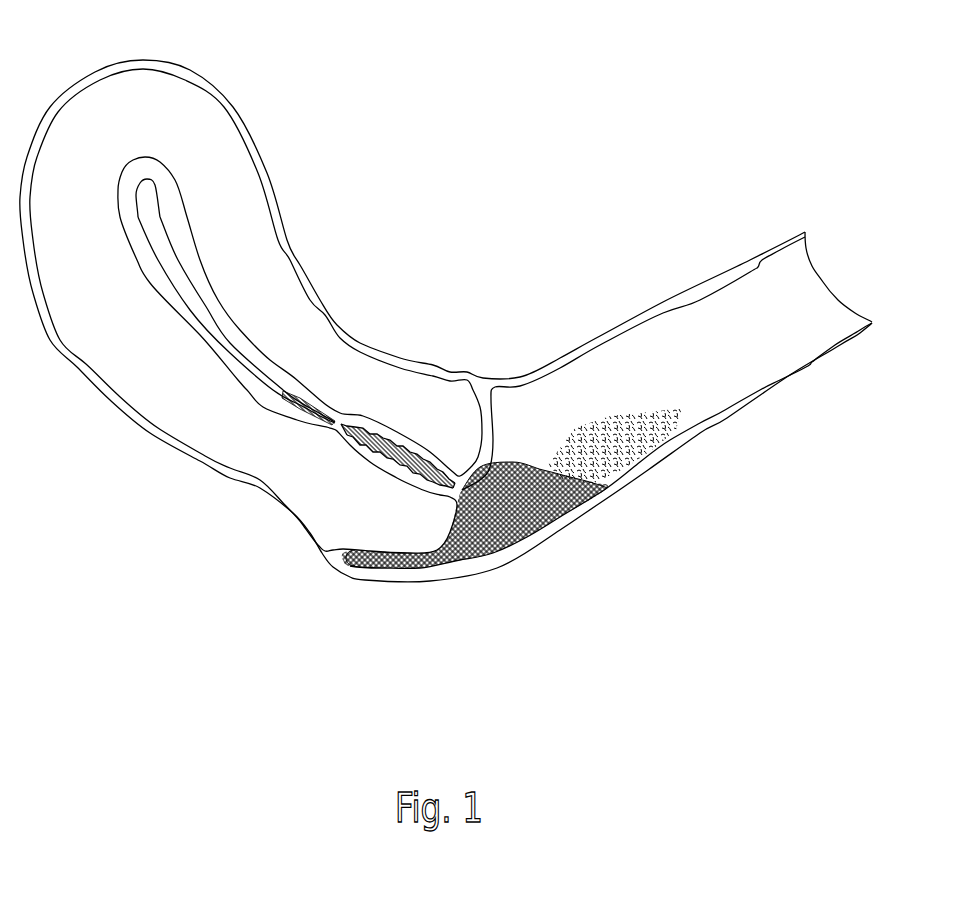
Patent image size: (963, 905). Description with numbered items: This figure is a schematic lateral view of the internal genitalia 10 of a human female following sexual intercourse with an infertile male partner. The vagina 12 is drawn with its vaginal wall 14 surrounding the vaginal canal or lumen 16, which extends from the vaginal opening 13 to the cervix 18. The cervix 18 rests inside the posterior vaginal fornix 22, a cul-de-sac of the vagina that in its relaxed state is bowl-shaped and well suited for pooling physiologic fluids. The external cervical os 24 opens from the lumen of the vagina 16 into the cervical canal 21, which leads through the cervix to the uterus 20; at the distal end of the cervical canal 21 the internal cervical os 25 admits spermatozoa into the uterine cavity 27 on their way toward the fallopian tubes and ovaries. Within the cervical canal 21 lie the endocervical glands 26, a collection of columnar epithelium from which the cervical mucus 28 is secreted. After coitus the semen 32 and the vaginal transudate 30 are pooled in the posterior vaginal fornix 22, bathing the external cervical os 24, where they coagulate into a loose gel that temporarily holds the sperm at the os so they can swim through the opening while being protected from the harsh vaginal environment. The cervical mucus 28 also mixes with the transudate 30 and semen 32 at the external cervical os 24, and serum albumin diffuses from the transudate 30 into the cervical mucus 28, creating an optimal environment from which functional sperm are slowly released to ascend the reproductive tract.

The internal genitalia 10 is at (437, 183).
The vagina 12 is at (663, 302).
The vaginal opening 13 is at (823, 279).
The vaginal wall 14 is at (725, 418).
The vaginal canal or lumen 16 is at (733, 363).
The cervix 18 is at (452, 418).
The uterus 20 is at (205, 73).
The cervical canal 21 is at (380, 447).
The posterior vaginal fornix 22 is at (367, 560).
The external cervical os 24 is at (462, 490).
The internal cervical os 25 is at (340, 425).
The endocervical glands 26 is at (397, 440).
The uterine cavity 27 is at (163, 252).
The cervical mucus 28 is at (417, 468).
The vaginal transudate 30 is at (513, 517).
The semen 32 is at (617, 453).